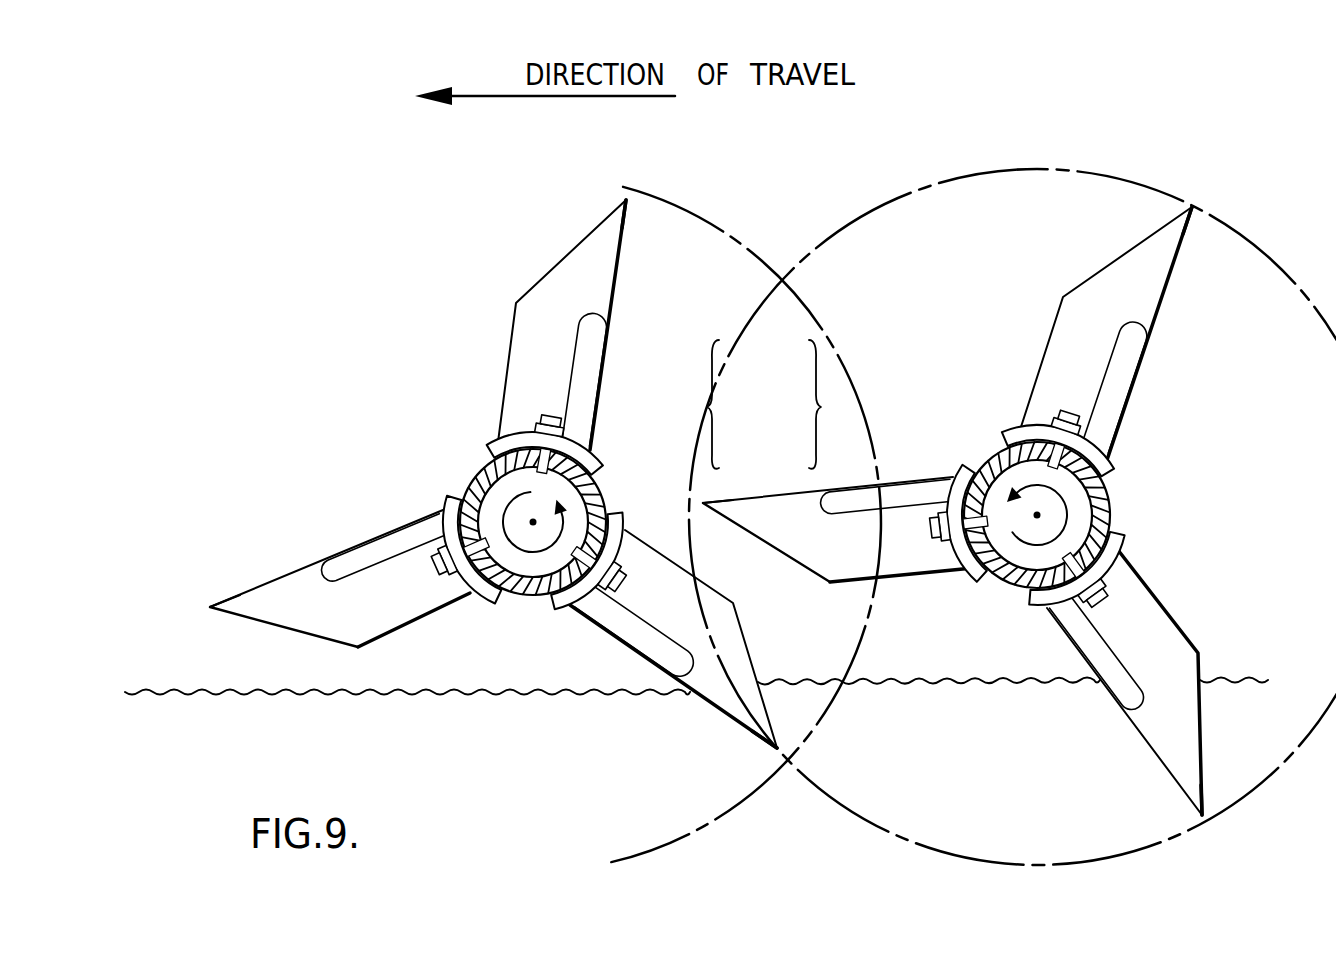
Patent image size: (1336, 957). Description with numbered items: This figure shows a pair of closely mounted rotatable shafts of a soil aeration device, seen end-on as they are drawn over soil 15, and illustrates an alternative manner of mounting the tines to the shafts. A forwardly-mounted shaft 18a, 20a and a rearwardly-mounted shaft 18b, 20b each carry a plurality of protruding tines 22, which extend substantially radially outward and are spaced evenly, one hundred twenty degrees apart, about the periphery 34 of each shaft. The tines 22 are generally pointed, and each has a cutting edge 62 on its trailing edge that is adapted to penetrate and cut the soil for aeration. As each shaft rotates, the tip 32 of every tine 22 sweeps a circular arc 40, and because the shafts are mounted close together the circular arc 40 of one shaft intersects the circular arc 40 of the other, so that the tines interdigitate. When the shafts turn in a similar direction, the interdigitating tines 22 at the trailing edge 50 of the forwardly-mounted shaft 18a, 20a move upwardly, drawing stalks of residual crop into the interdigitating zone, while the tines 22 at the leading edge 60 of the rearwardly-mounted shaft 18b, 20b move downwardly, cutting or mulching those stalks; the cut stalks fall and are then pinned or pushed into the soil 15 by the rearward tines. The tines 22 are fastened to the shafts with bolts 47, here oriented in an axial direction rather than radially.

The soil 15 is at (200, 688).
The forwardly-mounted rotatable shaft 18a is at (534, 548).
The forwardly-mounted rotatable shaft 20a is at (522, 588).
The rearwardly-mounted rotatable shaft 18b is at (1033, 532).
The rearwardly-mounted rotatable shaft 20b is at (1003, 582).
The tine 22 is at (719, 475).
The tip 32 is at (624, 198).
The periphery 34 is at (466, 482).
The circular arc 40 is at (722, 228).
The bolt 47 is at (440, 574).
The trailing edge 50 is at (731, 404).
The leading edge 60 is at (794, 404).
The cutting edge 62 is at (556, 258).